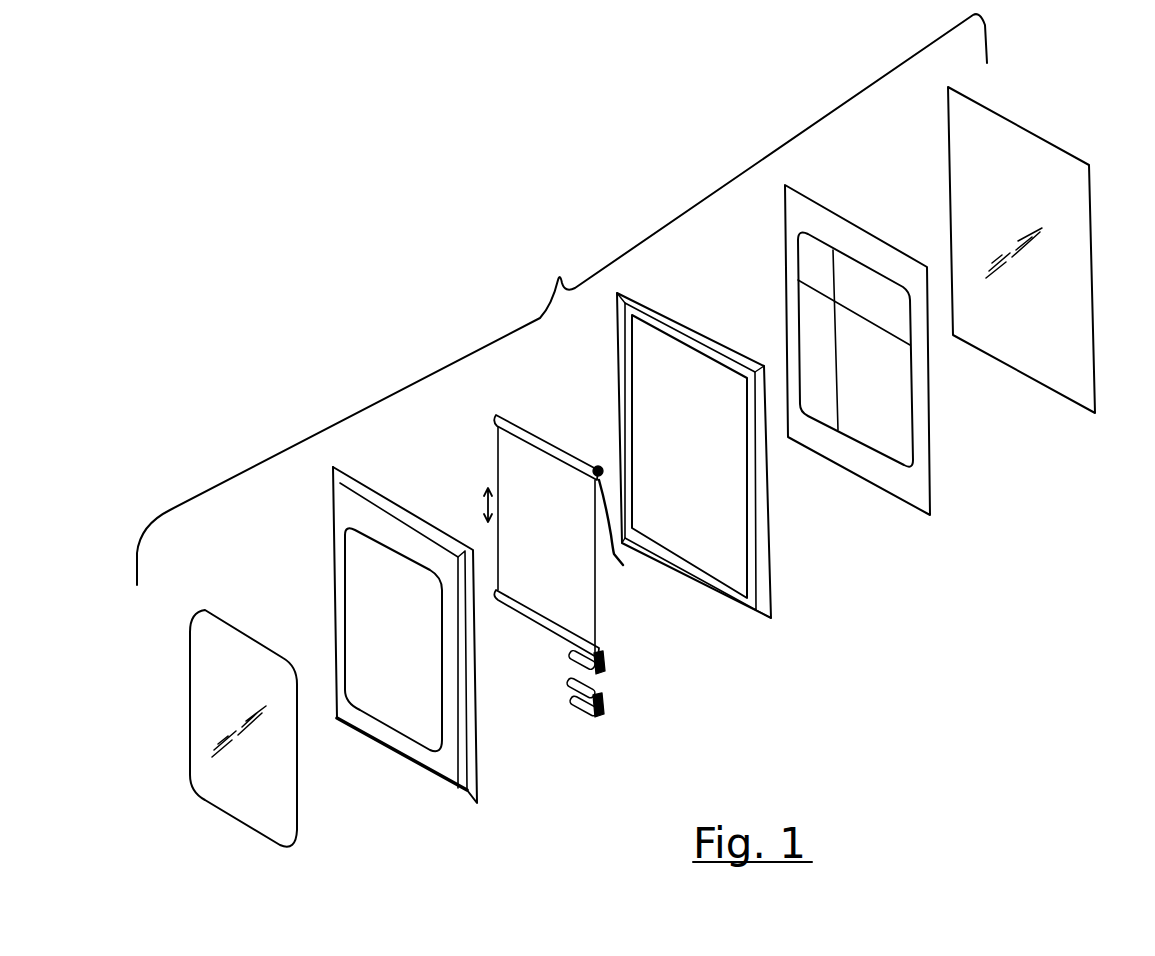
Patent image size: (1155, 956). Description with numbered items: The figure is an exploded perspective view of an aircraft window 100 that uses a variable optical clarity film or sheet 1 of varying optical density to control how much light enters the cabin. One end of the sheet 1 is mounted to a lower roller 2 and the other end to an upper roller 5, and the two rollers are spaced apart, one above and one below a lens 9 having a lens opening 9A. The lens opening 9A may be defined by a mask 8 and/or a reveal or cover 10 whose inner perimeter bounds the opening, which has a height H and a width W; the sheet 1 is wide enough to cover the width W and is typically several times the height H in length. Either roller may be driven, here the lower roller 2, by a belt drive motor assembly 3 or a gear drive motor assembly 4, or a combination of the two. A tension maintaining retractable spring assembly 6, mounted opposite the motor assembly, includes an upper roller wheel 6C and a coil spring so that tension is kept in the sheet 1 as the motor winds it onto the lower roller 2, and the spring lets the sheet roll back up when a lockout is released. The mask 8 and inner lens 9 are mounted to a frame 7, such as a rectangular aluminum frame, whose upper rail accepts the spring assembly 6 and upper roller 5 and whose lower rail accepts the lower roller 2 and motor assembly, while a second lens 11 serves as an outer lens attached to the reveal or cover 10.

The aircraft window 100 is at (562, 299).
The variable optical clarity film or sheet (VLT sheet) 1 is at (597, 577).
The lower roller 2 is at (557, 637).
The belt drive motor assembly 3 is at (603, 676).
The gear drive motor assembly 4 is at (570, 663).
The upper roller 5 is at (562, 450).
The tension maintaining retractable spring assembly 6 is at (599, 464).
The upper roller wheel 6C is at (627, 533).
The frame 7 is at (770, 550).
The mask 8 is at (908, 365).
The lens 9 is at (1018, 373).
The lens opening 9A is at (885, 392).
The reveal or cover 10 is at (480, 783).
The second lens 11 is at (300, 817).
The width W is at (854, 312).
The height H is at (833, 340).